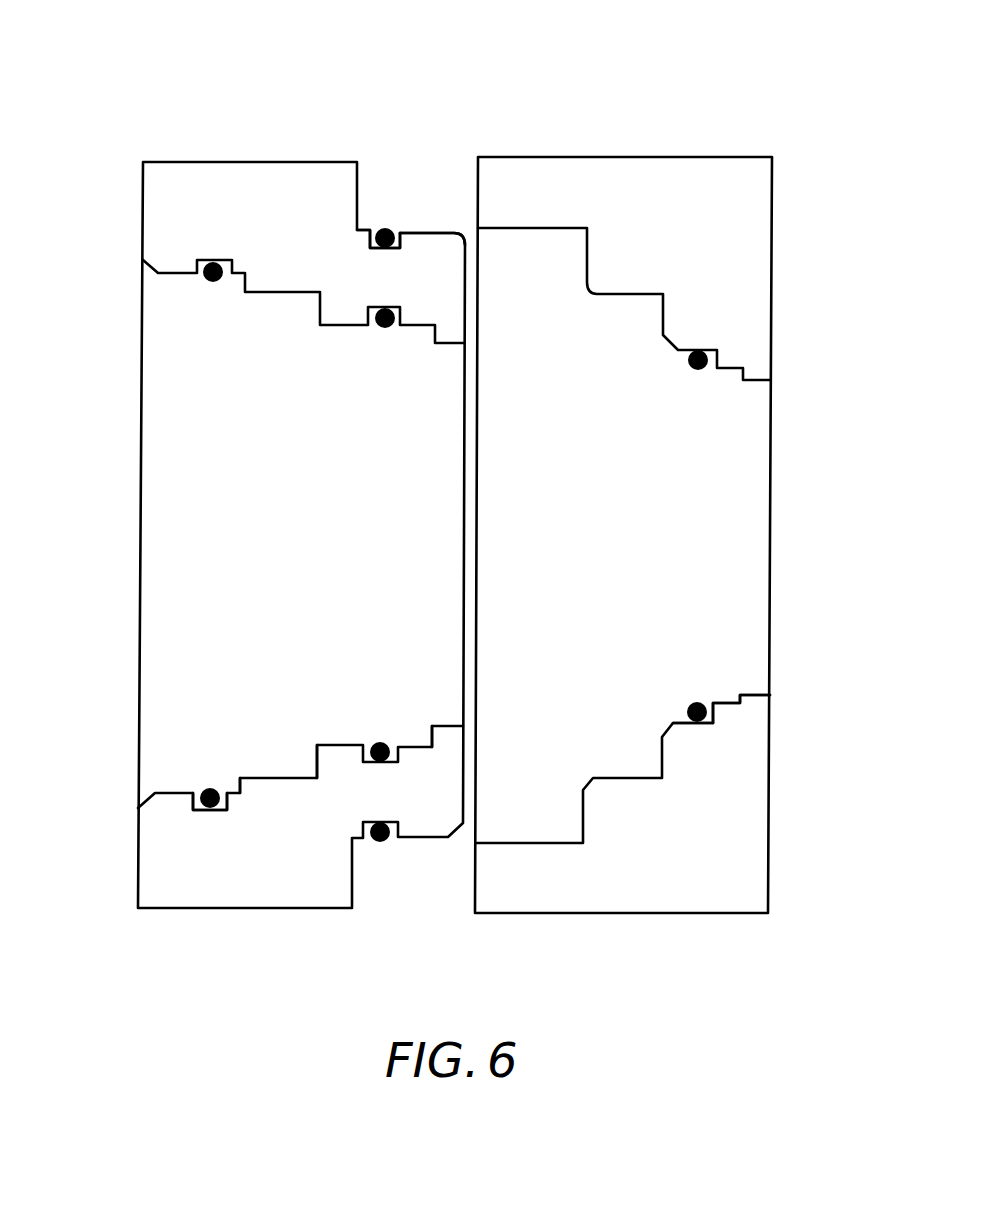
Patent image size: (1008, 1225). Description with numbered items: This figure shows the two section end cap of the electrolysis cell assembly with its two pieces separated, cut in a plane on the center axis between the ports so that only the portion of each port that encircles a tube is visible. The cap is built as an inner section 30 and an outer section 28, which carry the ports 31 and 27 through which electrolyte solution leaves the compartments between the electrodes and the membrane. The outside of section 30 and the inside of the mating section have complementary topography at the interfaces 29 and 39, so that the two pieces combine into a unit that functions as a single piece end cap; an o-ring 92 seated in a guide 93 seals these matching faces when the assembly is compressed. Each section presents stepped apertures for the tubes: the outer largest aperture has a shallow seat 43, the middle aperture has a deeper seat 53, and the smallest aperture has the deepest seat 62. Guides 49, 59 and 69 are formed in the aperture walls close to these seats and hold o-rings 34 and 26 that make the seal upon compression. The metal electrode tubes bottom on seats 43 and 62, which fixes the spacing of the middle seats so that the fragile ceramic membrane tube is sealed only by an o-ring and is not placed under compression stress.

The o-ring 26 is at (697, 700).
The port 27 is at (650, 308).
The fitting 28 is at (618, 123).
The interface 29 is at (588, 812).
The end cap section 30 is at (245, 124).
The port 31 is at (278, 300).
The o-ring 34 is at (210, 790).
The interface 39 is at (465, 265).
The seat 43 is at (240, 793).
The guide 49 is at (197, 810).
The seat 53 is at (432, 747).
The guide 59 is at (363, 762).
The seat 62 is at (742, 695).
The guide 69 is at (708, 727).
The o-ring 92 is at (383, 228).
The guide 93 is at (372, 247).